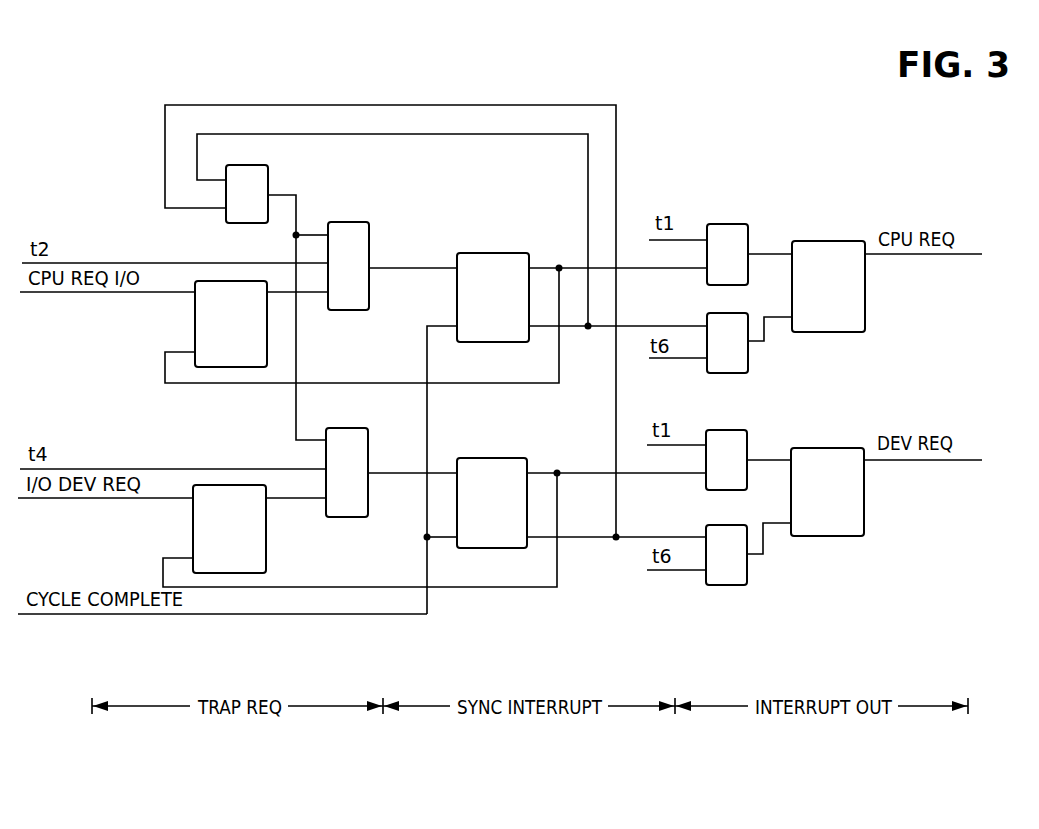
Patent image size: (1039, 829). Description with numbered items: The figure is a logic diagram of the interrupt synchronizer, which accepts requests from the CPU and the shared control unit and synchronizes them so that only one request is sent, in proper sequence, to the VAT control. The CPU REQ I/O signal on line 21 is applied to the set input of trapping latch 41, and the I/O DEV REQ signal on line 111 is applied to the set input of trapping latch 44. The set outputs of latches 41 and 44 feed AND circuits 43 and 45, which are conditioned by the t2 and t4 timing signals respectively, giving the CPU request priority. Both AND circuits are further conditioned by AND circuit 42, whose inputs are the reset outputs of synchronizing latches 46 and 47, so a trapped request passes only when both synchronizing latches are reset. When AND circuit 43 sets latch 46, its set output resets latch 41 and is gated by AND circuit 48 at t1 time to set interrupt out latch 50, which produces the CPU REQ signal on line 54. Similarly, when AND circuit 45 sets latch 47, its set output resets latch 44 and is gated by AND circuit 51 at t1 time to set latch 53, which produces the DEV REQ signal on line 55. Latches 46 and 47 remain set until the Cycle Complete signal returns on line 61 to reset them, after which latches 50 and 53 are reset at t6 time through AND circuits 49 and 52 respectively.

The CPU REQ I/O line 21 is at (66, 295).
The latch 41 is at (195, 327).
The AND circuit 42 is at (238, 217).
The AND circuit 43 is at (339, 292).
The latch 44 is at (266, 540).
The AND circuit 45 is at (338, 498).
The latch 46 is at (491, 253).
The latch 47 is at (490, 458).
The AND circuit 48 is at (718, 277).
The AND circuit 49 is at (718, 366).
The latch 50 is at (825, 241).
The AND circuit 51 is at (717, 483).
The AND circuit 52 is at (717, 578).
The latch 53 is at (824, 448).
The CPU REQ line 54 is at (920, 257).
The DEV REQ line 55 is at (917, 463).
The Cycle Complete line 61 is at (92, 617).
The I/O DEV REQ line 111 is at (64, 501).